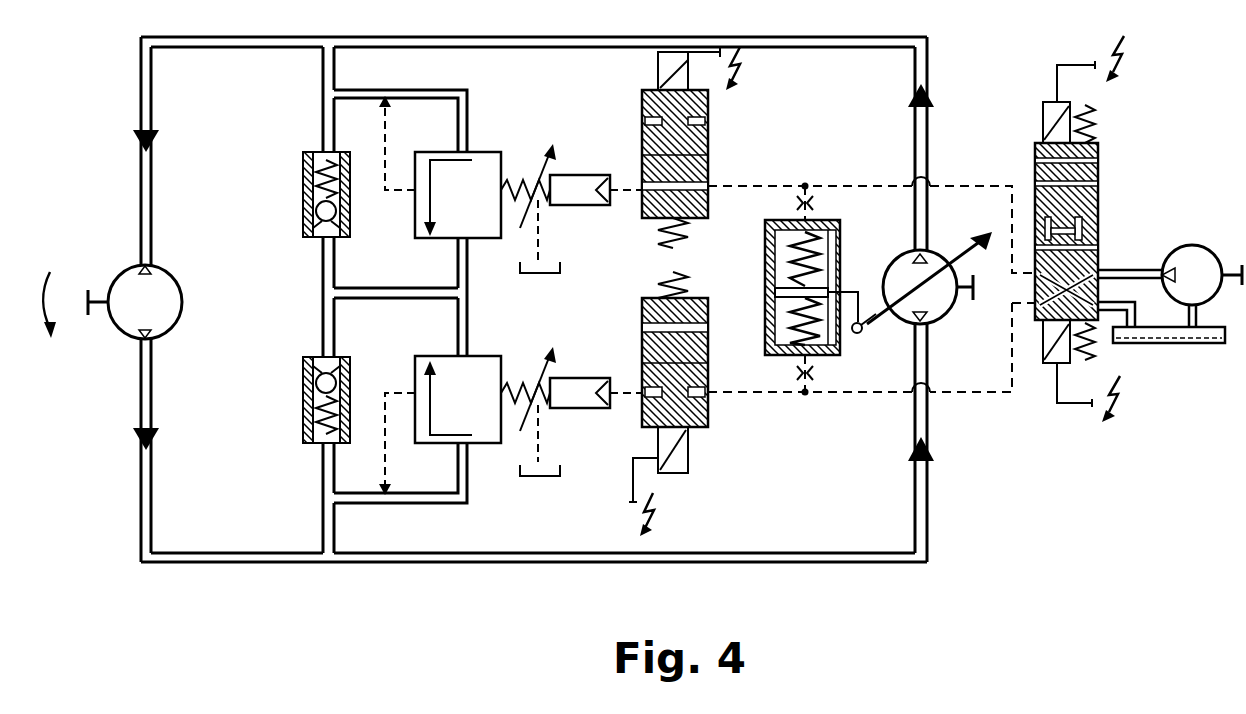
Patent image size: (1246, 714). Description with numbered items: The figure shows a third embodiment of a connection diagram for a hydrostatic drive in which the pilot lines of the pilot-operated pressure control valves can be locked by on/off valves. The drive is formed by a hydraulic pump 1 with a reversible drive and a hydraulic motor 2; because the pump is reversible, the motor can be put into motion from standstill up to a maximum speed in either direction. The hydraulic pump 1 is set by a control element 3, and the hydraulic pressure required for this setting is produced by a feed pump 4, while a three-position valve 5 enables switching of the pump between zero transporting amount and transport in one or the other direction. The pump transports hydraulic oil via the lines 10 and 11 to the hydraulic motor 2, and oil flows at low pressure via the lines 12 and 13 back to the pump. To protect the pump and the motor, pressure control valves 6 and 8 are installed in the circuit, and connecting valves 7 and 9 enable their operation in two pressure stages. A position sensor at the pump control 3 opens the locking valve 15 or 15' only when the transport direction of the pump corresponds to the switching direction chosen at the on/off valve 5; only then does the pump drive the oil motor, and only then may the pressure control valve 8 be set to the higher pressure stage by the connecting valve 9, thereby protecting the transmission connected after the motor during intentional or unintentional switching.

The hydraulic pump 1 is at (945, 296).
The hydraulic motor 2 is at (123, 319).
The control element 3 is at (822, 262).
The feed pump 4 is at (1213, 251).
The three-position valve 5 is at (1099, 173).
The pressure control valve 6 is at (487, 166).
The connecting valve 7 is at (576, 180).
The pressure control valve 8 is at (490, 426).
The connecting valve 9 is at (578, 408).
The line 10 is at (918, 66).
The line 11 is at (142, 69).
The line 12 is at (144, 498).
The line 13 is at (921, 516).
The locking valve 15 is at (711, 404).
The locking valve 15' is at (724, 147).